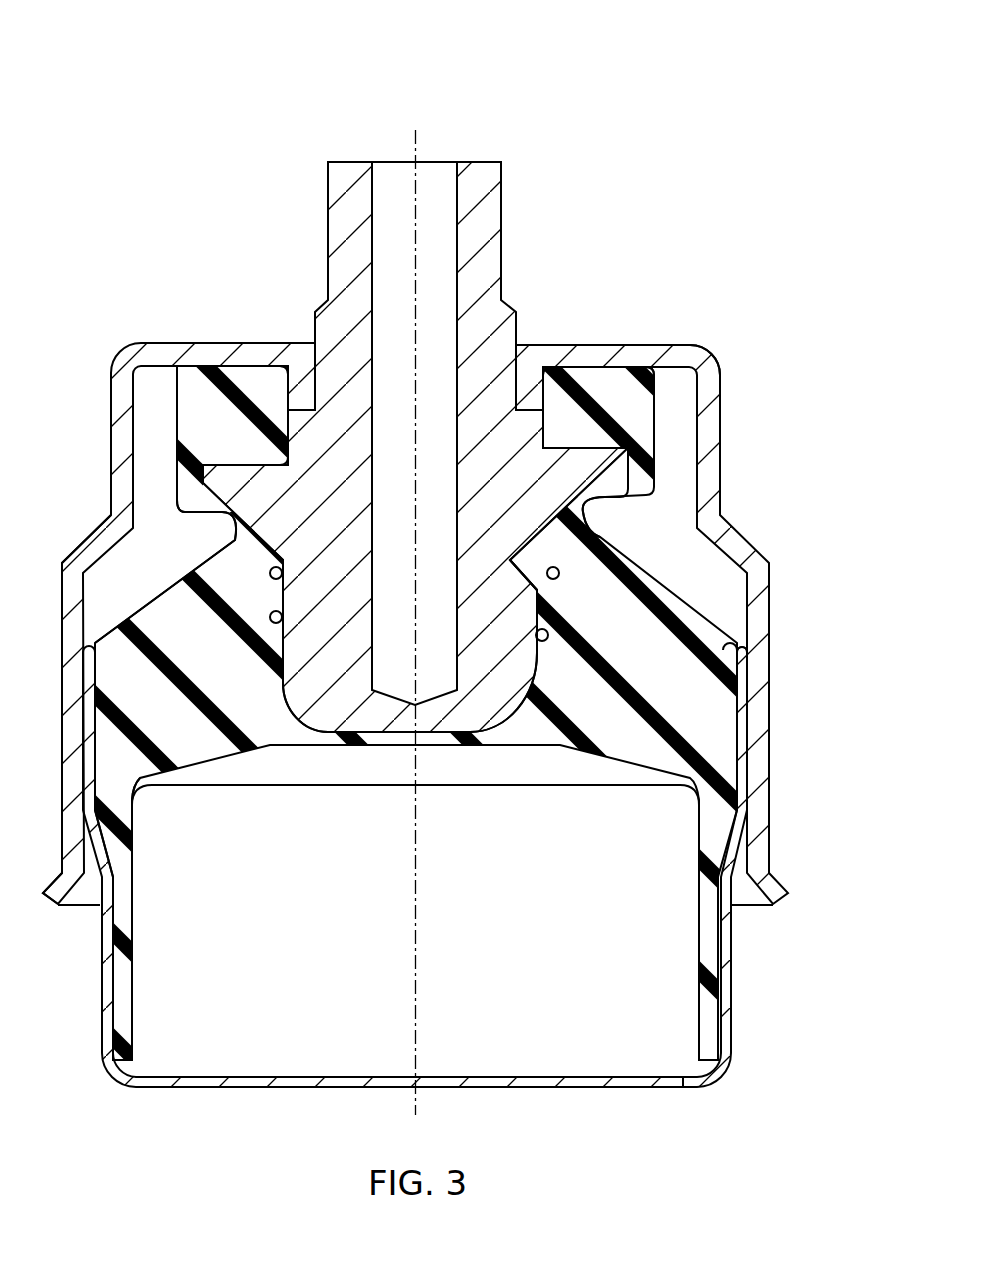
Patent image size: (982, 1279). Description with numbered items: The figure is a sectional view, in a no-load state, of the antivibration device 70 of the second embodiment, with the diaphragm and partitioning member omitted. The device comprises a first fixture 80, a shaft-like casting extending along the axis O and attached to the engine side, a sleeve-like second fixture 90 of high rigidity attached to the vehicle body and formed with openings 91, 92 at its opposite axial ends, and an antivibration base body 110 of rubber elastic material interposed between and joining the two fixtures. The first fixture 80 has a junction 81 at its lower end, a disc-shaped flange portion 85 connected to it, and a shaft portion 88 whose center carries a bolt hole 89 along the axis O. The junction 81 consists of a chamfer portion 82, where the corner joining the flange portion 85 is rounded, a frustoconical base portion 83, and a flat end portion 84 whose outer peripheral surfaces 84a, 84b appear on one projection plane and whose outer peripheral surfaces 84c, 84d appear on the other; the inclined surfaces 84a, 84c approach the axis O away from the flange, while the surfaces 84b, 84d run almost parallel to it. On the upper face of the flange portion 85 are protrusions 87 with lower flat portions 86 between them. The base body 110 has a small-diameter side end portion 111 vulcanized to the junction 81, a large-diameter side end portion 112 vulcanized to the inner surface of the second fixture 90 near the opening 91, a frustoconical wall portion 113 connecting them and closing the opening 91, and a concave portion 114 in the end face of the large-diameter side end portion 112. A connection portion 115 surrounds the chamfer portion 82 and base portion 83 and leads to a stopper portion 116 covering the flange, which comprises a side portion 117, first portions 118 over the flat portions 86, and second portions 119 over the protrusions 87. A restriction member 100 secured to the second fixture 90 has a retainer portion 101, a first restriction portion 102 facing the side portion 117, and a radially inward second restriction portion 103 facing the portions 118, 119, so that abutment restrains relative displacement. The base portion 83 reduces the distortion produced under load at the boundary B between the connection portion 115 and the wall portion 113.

The antivibration device 70 is at (707, 95).
The axis O is at (420, 145).
The first fixture 80 is at (542, 228).
The junction 81 is at (567, 632).
The chamfer portion 82 is at (600, 527).
The base portion 83 is at (559, 574).
The end portion 84 is at (540, 660).
The outer peripheral surface 84a is at (548, 565).
The outer peripheral surface 84b is at (536, 634).
The outer peripheral surface 84c is at (279, 570).
The outer peripheral surface 84d is at (283, 616).
The flange portion 85 is at (243, 466).
The flat portion 86 is at (213, 448).
The protrusion 87 is at (574, 455).
The shaft portion 88 is at (342, 200).
The bolt hole 89 is at (372, 183).
The second fixture 90 is at (730, 955).
The opening 91 is at (745, 637).
The opening 92 is at (706, 1046).
The restriction member 100 is at (778, 477).
The retainer portion 101 is at (760, 752).
The first restriction portion 102 is at (705, 427).
The second restriction portion 103 is at (636, 357).
The antivibration base body 110 is at (103, 587).
The small-diameter side end portion 111 is at (233, 540).
The large-diameter side end portion 112 is at (138, 788).
The wall portion 113 is at (153, 620).
The concave portion 114 is at (225, 765).
The connection portion 115 is at (207, 516).
The stopper portion 116 is at (177, 312).
The side portion 117 is at (187, 487).
The first portion 118 is at (239, 378).
The second portion 119 is at (598, 383).
The boundary B is at (605, 536).